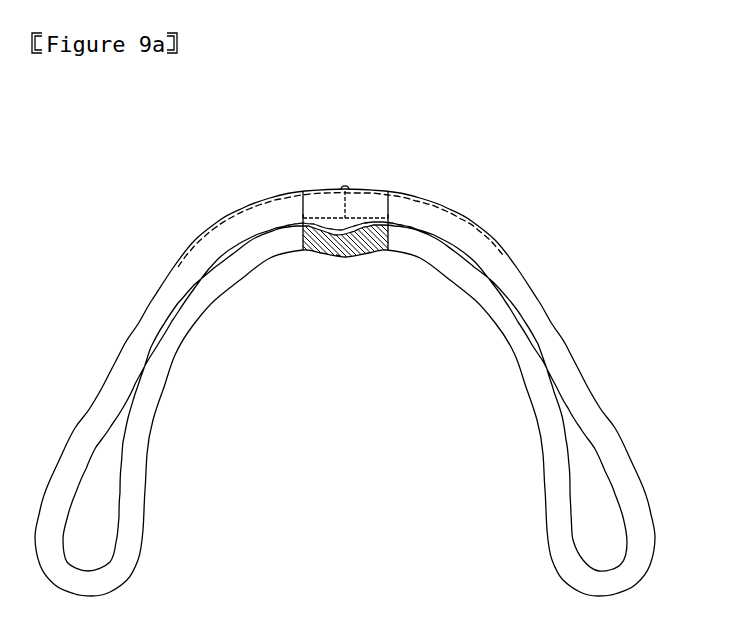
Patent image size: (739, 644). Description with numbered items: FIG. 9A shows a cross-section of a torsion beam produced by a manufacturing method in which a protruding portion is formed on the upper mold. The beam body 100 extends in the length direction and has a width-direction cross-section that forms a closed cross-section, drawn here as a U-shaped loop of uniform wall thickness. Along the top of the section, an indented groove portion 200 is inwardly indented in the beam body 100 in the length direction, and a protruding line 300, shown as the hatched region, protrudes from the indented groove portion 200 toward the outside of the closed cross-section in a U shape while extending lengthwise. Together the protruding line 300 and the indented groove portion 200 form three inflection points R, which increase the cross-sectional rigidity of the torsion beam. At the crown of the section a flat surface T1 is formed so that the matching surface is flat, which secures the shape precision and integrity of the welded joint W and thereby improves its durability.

The beam body 100 is at (628, 448).
The indented groove portion 200 is at (546, 497).
The protruding line 300 is at (321, 259).
The flat surface T1 is at (321, 190).
The welded joint W is at (346, 186).
The inflection points R is at (298, 216).